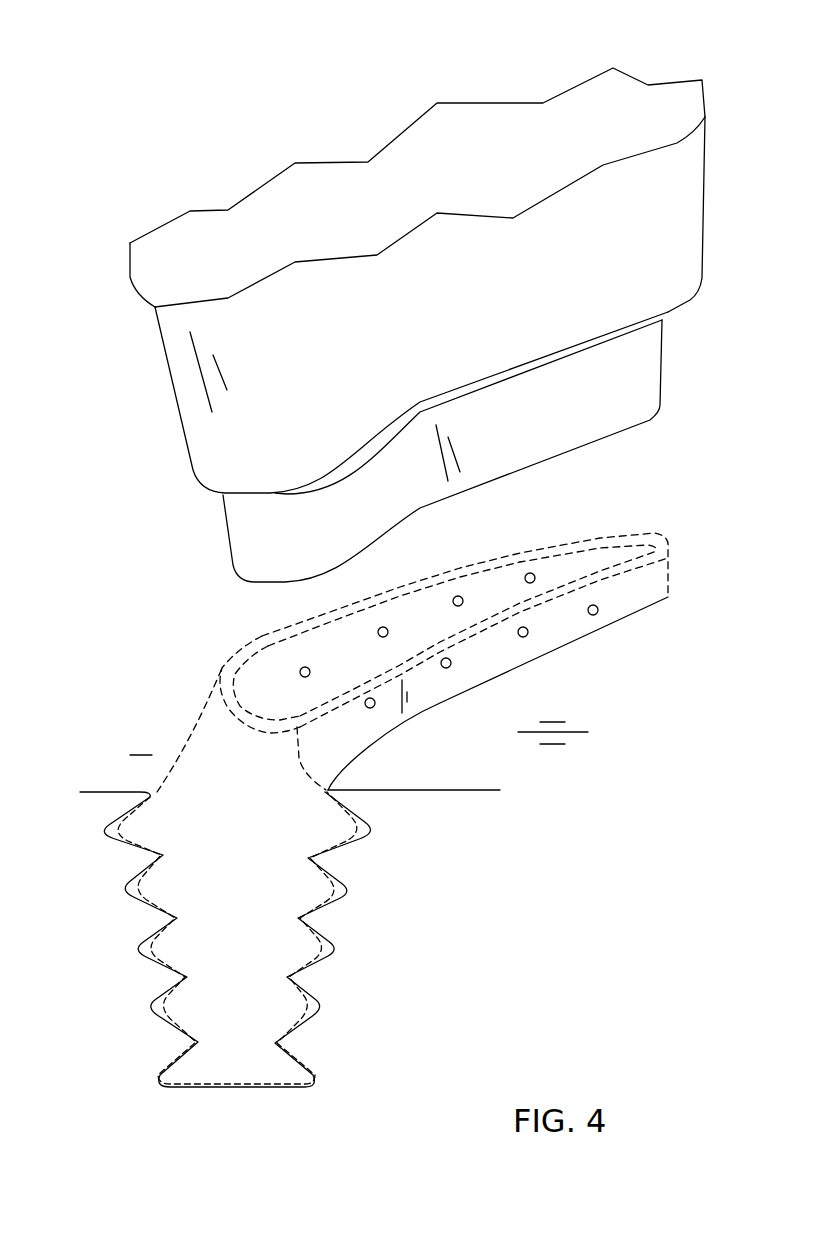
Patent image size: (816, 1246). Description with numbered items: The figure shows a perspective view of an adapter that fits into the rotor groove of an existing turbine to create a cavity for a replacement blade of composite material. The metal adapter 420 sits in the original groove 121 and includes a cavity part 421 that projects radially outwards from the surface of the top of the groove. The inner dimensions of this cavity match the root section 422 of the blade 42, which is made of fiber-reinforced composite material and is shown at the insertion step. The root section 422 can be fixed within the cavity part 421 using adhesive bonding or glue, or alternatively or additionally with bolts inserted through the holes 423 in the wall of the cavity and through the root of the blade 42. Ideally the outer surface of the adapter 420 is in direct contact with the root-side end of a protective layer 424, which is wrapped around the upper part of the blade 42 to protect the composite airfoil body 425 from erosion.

The blade 42 is at (163, 530).
The airfoil body 425 is at (383, 216).
The protective layer 424 is at (280, 371).
The root section 422 is at (280, 548).
The cavity part 421 is at (315, 663).
The holes 423 is at (525, 637).
The metal adapter 420 is at (265, 955).
The original groove 121 is at (109, 796).